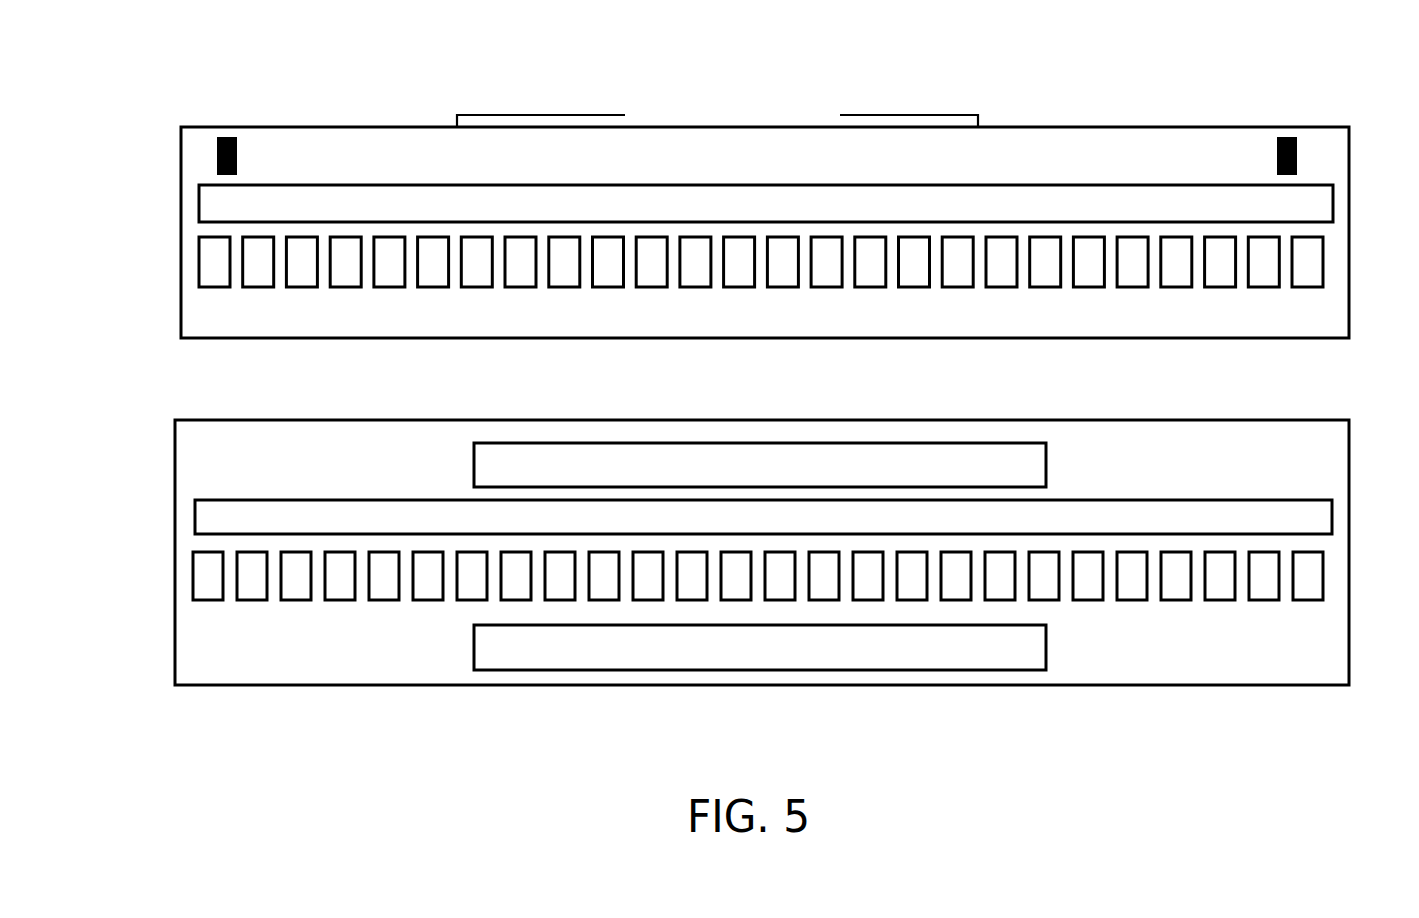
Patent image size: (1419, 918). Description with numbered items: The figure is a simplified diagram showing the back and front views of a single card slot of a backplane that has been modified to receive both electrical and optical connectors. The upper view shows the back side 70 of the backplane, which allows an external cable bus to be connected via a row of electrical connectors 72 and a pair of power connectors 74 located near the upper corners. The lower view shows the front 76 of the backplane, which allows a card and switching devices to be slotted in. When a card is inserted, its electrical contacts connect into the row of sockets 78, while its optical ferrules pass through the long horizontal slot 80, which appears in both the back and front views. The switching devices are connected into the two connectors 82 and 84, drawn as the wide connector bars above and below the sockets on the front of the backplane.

The back side of the backplane 70 is at (897, 150).
The electrical connectors 72 is at (199, 273).
The power connectors 74 is at (214, 152).
The front of the backplane 76 is at (422, 663).
The sockets 78 is at (193, 583).
The slot 80 is at (222, 200).
The connector 82 is at (1023, 468).
The connector 84 is at (1032, 643).